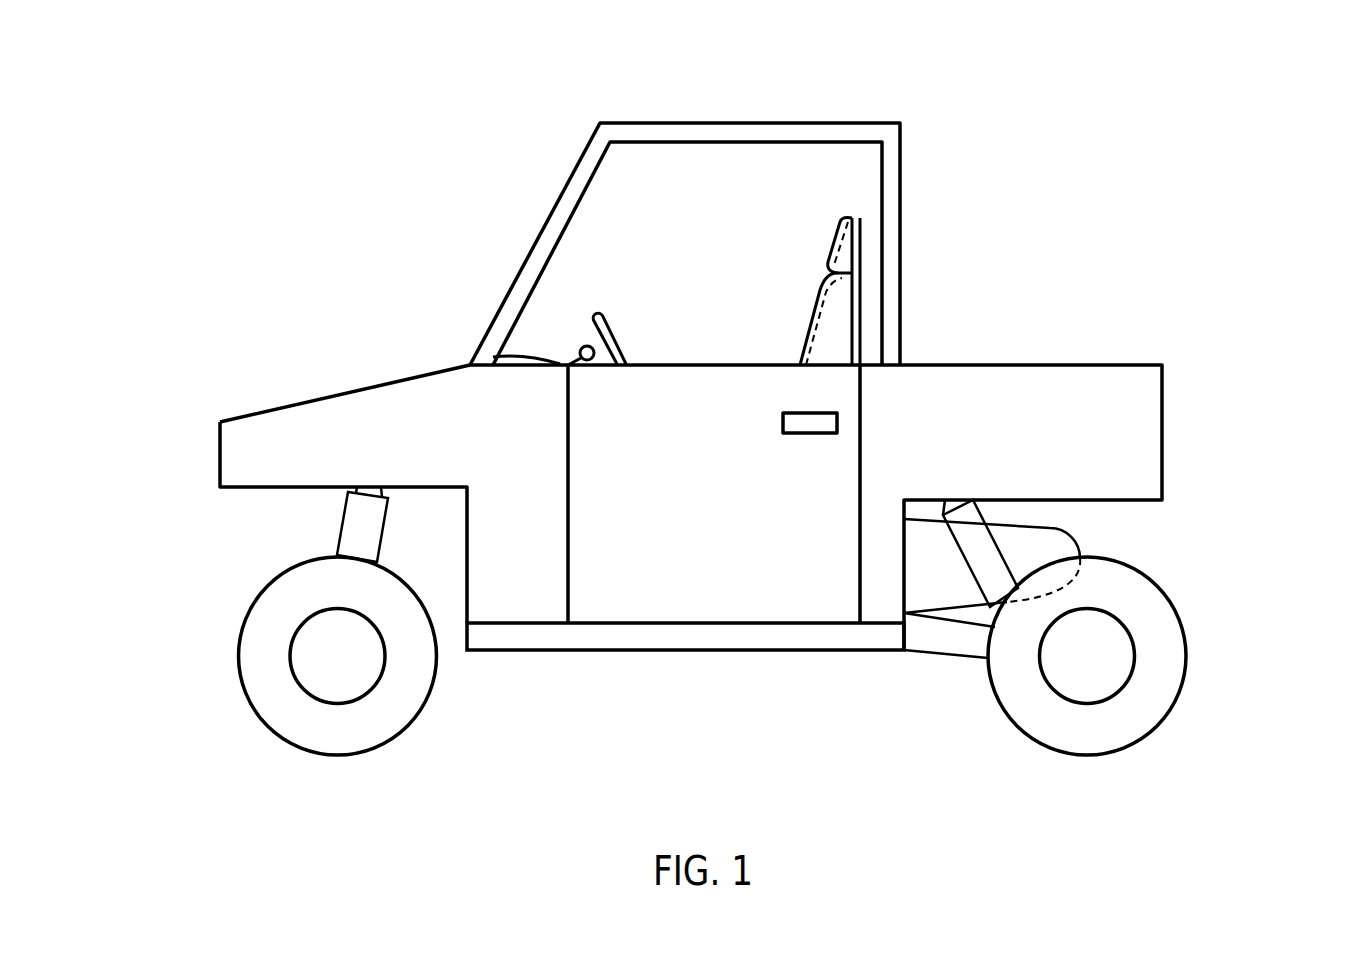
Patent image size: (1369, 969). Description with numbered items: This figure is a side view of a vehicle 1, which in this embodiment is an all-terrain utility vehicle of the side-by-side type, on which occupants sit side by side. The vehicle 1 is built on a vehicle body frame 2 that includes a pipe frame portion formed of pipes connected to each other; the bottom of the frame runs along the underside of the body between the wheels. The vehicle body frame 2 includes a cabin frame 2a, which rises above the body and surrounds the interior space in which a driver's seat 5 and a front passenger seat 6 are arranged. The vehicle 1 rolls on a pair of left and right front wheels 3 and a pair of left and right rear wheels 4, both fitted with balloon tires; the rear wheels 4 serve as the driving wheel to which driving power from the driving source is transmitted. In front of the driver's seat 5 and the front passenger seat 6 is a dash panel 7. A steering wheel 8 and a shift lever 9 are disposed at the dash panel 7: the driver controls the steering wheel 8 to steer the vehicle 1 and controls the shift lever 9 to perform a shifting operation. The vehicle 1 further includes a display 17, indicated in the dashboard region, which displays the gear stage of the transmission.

The vehicle 1 is at (389, 167).
The vehicle body frame 2 is at (567, 653).
The cabin frame 2a is at (575, 168).
The front wheels 3 is at (240, 643).
The rear wheels 4 is at (1185, 645).
The driver's seat 5 is at (812, 310).
The front passenger seat 6 is at (815, 283).
The dash panel 7 is at (527, 357).
The steering wheel 8 is at (600, 312).
The shift lever 9 is at (582, 347).
The display 17 is at (543, 363).